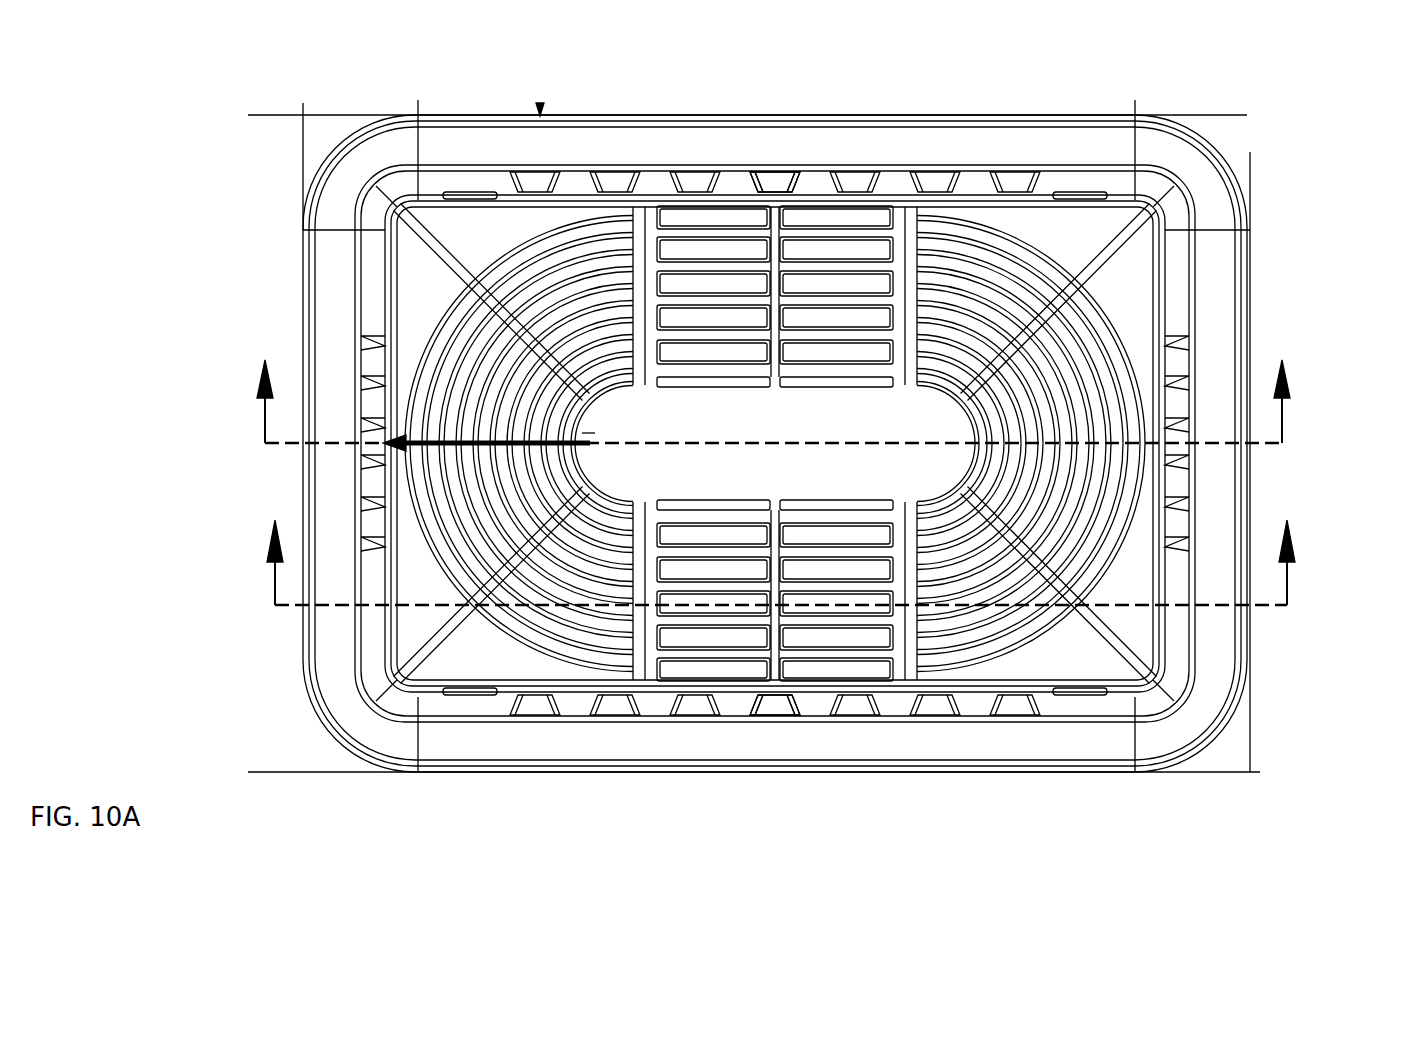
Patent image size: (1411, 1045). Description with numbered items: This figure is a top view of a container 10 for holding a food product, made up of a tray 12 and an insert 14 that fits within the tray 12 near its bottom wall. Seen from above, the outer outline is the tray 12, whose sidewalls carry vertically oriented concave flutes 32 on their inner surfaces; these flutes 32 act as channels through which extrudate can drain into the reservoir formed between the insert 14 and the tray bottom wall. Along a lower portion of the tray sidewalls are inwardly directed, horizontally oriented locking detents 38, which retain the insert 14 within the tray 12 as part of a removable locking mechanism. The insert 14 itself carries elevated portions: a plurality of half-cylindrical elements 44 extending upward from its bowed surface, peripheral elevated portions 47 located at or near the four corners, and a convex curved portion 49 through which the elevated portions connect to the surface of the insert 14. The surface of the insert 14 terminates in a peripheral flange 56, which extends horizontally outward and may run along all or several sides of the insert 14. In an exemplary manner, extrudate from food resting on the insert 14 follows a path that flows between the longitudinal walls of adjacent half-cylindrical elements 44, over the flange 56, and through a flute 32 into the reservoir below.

The container 10 is at (789, 410).
The tray 12 is at (1215, 203).
The insert 14 is at (889, 443).
The concave flute 32 is at (358, 430).
The locking detent 38 is at (462, 197).
The half-cylindrical element 44 is at (1110, 412).
The peripheral elevated portion 47 is at (1128, 578).
The convex curved portion 49 is at (1153, 552).
The peripheral flange 56 is at (375, 490).